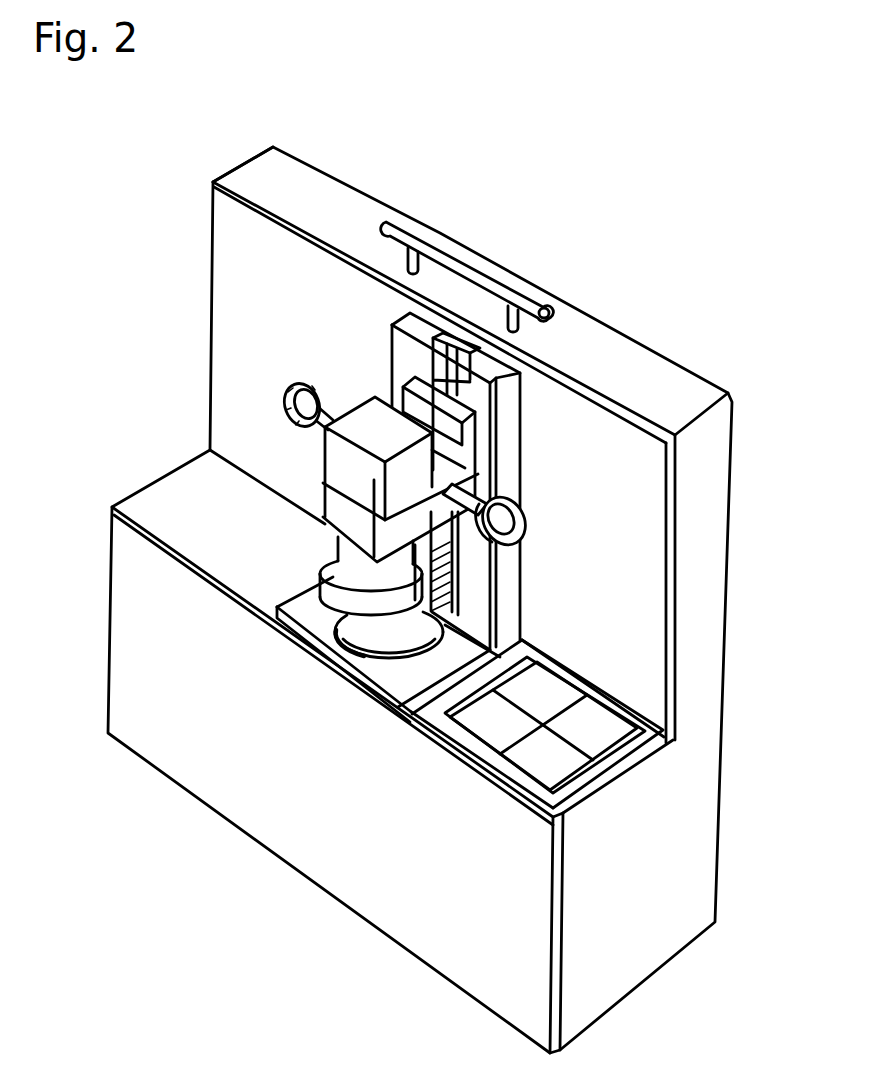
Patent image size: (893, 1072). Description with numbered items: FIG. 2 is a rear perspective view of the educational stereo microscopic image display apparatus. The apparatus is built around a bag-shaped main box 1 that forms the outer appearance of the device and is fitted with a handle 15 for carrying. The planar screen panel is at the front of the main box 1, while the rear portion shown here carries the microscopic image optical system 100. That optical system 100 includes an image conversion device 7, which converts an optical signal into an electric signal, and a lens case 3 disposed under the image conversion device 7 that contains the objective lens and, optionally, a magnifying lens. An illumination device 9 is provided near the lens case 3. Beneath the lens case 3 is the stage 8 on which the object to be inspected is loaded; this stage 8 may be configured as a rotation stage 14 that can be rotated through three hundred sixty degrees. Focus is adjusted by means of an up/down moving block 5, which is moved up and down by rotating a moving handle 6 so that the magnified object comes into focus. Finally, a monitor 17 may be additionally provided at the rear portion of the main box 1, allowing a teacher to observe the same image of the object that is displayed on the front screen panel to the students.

The main box 1 is at (698, 868).
The lens case 3 is at (340, 543).
The up/down moving block 5 is at (520, 373).
The moving handle 6 is at (525, 508).
The image conversion device 7 is at (440, 444).
The stage 8 is at (400, 680).
The illumination device 9 is at (307, 610).
The rotation stage 14 is at (333, 656).
The handle 15 is at (465, 270).
The monitor 17 is at (598, 730).
The microscopic image optical system 100 is at (276, 405).